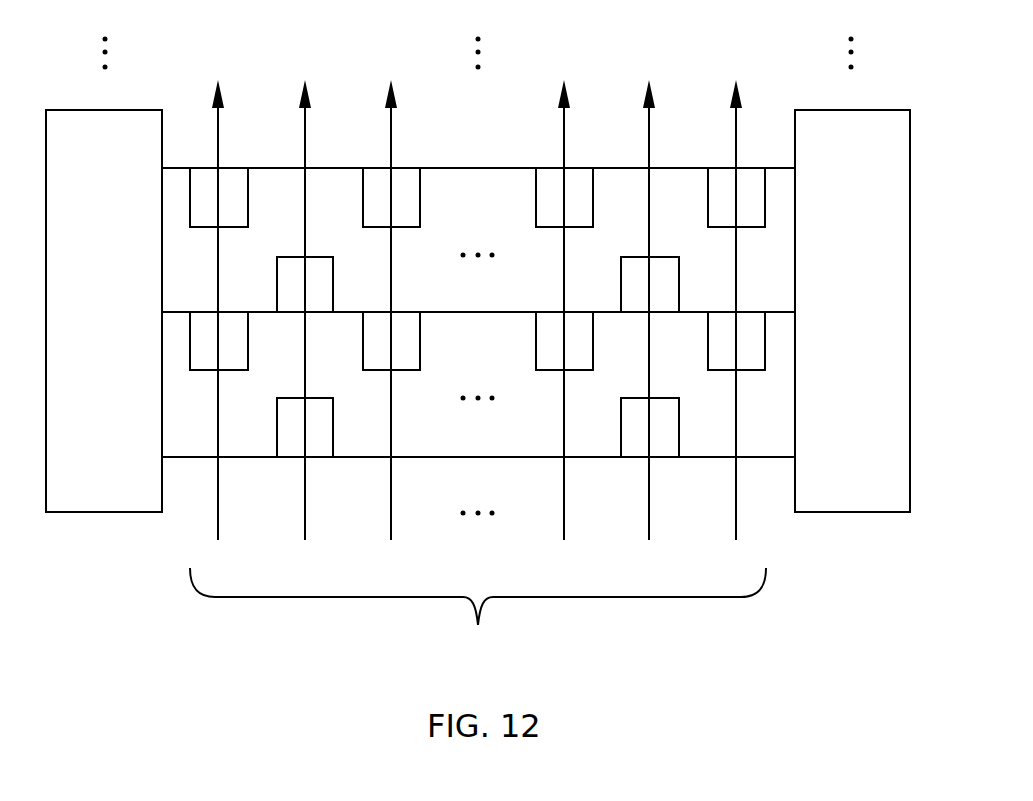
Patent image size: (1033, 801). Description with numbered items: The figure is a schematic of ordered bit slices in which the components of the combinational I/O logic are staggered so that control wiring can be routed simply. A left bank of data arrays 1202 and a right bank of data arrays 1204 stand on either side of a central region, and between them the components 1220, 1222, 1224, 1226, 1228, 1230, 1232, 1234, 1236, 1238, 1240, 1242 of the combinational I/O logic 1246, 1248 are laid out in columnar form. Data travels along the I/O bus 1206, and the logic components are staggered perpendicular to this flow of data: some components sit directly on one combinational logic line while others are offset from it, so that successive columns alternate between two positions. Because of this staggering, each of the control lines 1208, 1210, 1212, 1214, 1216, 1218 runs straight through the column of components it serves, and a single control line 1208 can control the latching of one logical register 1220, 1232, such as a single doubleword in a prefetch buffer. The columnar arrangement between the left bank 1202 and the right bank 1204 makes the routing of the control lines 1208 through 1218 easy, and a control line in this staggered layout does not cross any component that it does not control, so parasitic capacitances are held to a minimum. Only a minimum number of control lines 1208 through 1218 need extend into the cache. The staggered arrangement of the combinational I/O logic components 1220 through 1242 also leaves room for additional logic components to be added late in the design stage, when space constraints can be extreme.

The left bank of data arrays 1202 is at (72, 513).
The right bank of data arrays 1204 is at (850, 513).
The I/O bus 1206 is at (340, 600).
The control line 1208 is at (220, 133).
The control line 1210 is at (307, 133).
The control line 1212 is at (393, 133).
The control line 1214 is at (566, 133).
The control line 1216 is at (651, 133).
The control line 1218 is at (738, 133).
The combinational I/O logic component 1220 is at (248, 178).
The combinational I/O logic component 1222 is at (277, 288).
The combinational I/O logic component 1224 is at (398, 227).
The combinational I/O logic component 1226 is at (536, 218).
The combinational I/O logic component 1228 is at (621, 292).
The combinational I/O logic component 1230 is at (708, 181).
The combinational I/O logic component 1232 is at (248, 322).
The combinational I/O logic component 1234 is at (277, 432).
The combinational I/O logic component 1236 is at (410, 370).
The combinational I/O logic component 1238 is at (536, 368).
The combinational I/O logic component 1240 is at (621, 440).
The combinational I/O logic component 1242 is at (708, 322).
The combinational I/O logic 1246 is at (516, 457).
The combinational I/O logic 1248 is at (466, 168).